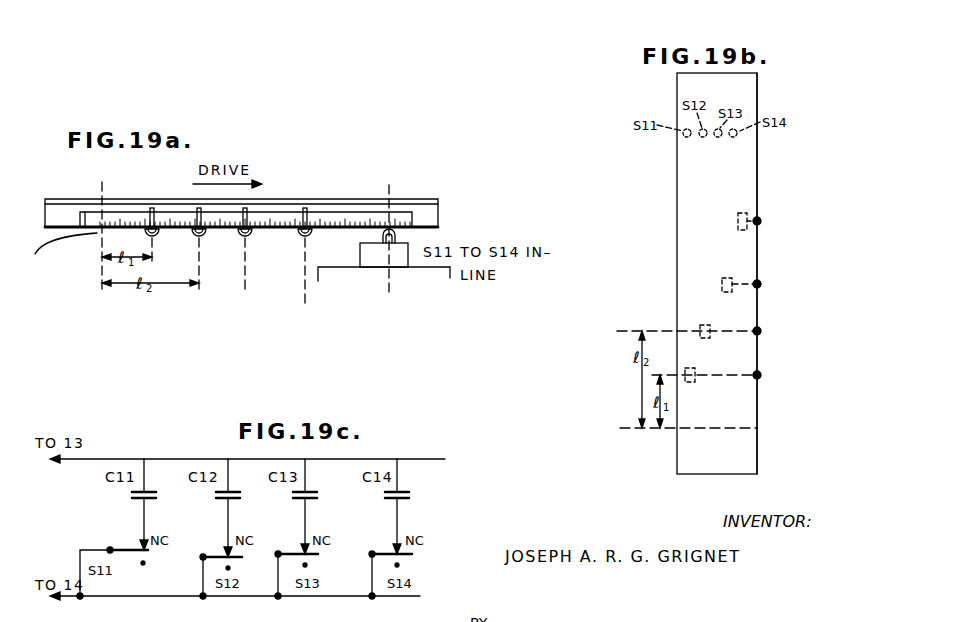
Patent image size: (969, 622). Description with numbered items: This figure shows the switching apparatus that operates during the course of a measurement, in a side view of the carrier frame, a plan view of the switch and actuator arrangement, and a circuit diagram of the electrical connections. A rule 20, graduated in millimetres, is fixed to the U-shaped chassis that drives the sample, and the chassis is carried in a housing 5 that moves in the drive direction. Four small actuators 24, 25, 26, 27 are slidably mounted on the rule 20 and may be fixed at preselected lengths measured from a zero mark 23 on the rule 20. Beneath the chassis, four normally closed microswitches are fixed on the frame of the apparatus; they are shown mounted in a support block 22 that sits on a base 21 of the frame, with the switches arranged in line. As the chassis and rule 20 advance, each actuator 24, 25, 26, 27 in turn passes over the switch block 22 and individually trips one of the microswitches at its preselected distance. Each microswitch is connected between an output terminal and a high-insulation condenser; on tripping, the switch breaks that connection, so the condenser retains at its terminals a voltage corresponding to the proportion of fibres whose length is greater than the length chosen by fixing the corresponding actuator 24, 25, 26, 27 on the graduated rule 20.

In FIG. 19A, the housing 5 is at (438, 210).
In FIG. 19A, the rule 20 is at (405, 212).
In FIG. 19B, the rule 20 is at (768, 405).
In FIG. 19A, the base plate 21 is at (450, 271).
In FIG. 19A, the sensor support block 22 is at (384, 252).
In FIG. 19B, the sensor support block 22 is at (677, 170).
In FIG. 19A, the zero mark 23 is at (70, 253).
In FIG. 19B, the zero mark 23 is at (735, 430).
In FIG. 19A, the actuator 24 is at (161, 235).
In FIG. 19B, the actuator 24 is at (697, 372).
In FIG. 19A, the actuator 25 is at (209, 250).
In FIG. 19B, the actuator 25 is at (706, 326).
In FIG. 19A, the actuator 26 is at (255, 250).
In FIG. 19B, the actuator 26 is at (722, 284).
In FIG. 19A, the actuator 27 is at (317, 255).
In FIG. 19B, the actuator 27 is at (736, 226).